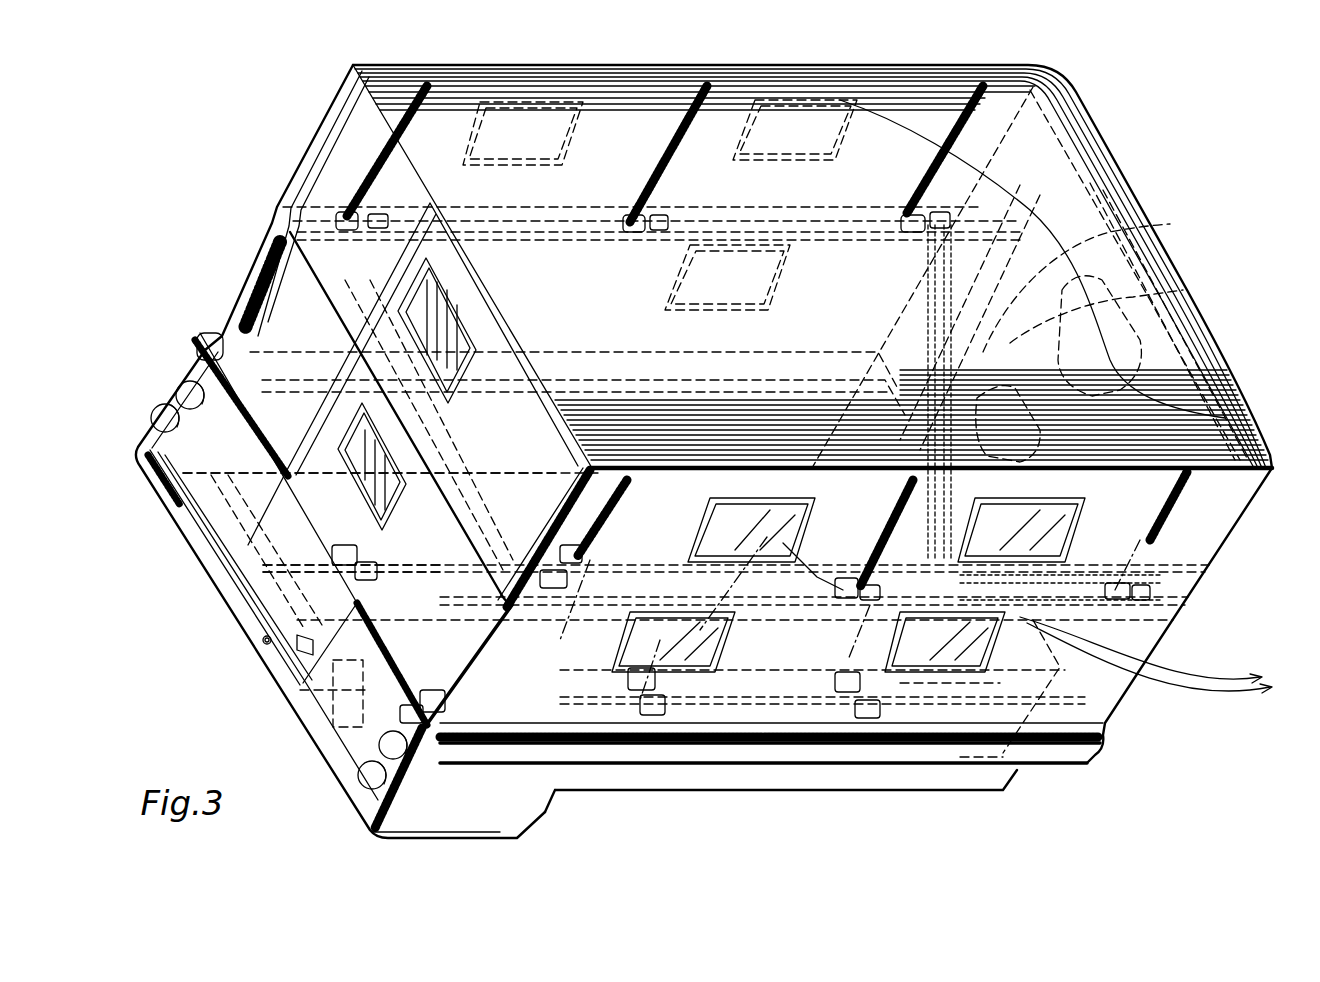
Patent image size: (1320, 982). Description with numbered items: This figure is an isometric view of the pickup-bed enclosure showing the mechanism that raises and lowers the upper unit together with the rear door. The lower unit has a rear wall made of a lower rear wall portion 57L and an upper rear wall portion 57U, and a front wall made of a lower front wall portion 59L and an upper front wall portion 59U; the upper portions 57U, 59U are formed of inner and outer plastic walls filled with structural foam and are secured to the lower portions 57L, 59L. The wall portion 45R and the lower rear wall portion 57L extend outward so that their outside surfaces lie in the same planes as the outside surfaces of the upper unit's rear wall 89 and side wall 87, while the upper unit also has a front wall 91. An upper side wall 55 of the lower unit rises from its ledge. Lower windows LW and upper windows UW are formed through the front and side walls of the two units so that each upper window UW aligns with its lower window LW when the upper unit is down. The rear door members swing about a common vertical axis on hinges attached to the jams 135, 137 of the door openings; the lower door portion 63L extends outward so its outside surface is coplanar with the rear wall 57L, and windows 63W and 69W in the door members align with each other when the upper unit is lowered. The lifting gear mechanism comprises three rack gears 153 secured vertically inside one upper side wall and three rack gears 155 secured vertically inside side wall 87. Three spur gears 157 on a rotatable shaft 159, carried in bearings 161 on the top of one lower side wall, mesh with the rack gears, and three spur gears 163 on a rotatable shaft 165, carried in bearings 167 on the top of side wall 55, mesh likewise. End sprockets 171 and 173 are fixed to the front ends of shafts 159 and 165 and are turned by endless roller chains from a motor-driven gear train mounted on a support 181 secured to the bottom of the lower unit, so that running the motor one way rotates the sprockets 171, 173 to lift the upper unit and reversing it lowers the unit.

The wall portion 45R is at (210, 335).
The upper side wall 55 is at (1083, 673).
The upper rear wall portion 57U is at (273, 307).
The lower rear wall portion 57L is at (337, 753).
The lower front wall portion 59L is at (1133, 230).
The upper front wall portion 59U is at (1148, 292).
The window 63W is at (363, 487).
The lower portion of door member 63L is at (317, 620).
The window 69W is at (397, 330).
The side wall 87 is at (1183, 530).
The rear wall 89 is at (350, 152).
The front wall 91 is at (1077, 177).
The jam 135 is at (343, 722).
The jam 137 is at (463, 473).
The rack gear 153 is at (627, 513).
The rack gear 155 is at (422, 84).
The spur gear 157 is at (343, 217).
The rotatable shaft 159 is at (787, 223).
The bearing 161 is at (377, 217).
The spur gear 163 is at (850, 585).
The rotatable shaft 165 is at (777, 607).
The bearing 167 is at (582, 612).
The end sprocket 171 is at (967, 213).
The end sprocket 173 is at (1160, 583).
The support 181 is at (870, 540).
The upper window UW is at (1057, 530).
The lower window LW is at (957, 650).